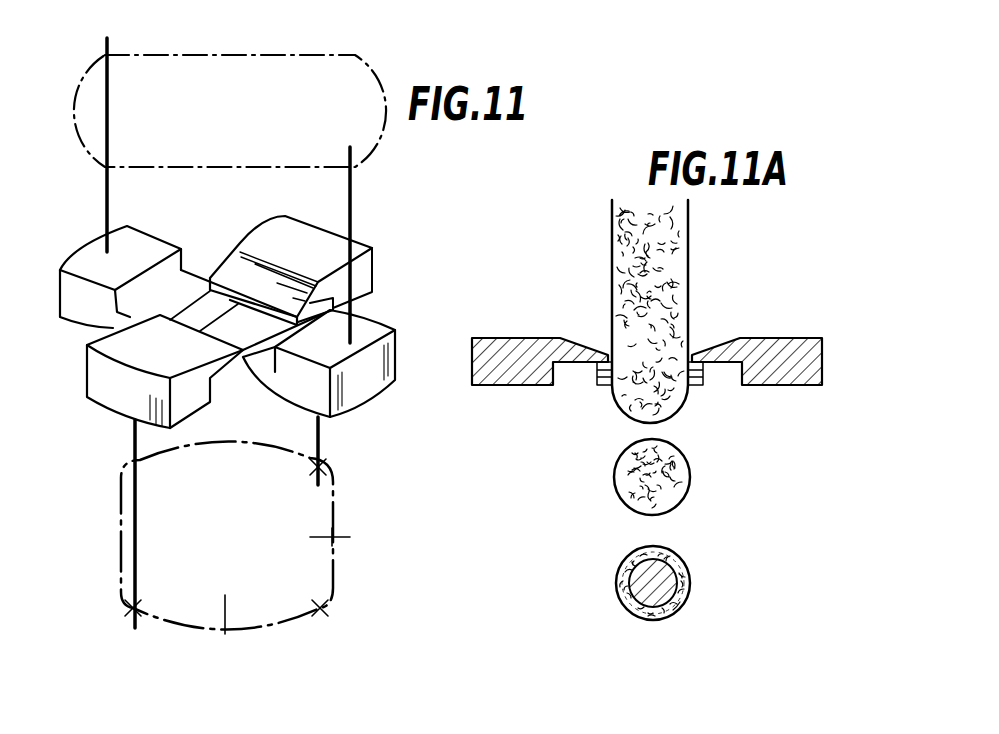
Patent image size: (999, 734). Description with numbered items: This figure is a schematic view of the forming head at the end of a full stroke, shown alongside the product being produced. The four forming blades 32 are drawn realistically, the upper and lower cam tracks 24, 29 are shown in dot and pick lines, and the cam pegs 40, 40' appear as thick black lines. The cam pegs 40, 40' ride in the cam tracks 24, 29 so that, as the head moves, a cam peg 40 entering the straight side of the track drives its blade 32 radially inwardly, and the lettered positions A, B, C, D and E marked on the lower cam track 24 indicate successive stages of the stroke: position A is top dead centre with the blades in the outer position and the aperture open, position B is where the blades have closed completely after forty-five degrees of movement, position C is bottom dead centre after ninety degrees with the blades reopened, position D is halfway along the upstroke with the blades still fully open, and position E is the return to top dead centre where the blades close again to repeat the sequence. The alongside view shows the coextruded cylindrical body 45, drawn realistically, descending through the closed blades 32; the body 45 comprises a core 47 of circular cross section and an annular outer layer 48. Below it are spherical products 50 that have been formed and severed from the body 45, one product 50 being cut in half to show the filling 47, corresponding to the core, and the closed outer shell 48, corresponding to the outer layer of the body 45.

In FIG. 11, the lower cam track 24 is at (120, 517).
In FIG. 11, the upper cam track 29 is at (253, 170).
In FIG. 11, the forming blades 32 is at (108, 381).
In FIG. 11A, the forming blades 32 is at (523, 355).
In FIG. 11, the cam pegs 40 is at (226, 519).
In FIG. 11, the cam pegs 40' is at (274, 190).
In FIG. 11A, the cylindrical body 45 is at (624, 262).
In FIG. 11A, the core 47 is at (682, 602).
In FIG. 11A, the outer layer 48 is at (687, 563).
In FIG. 11A, the spherical product 50 is at (625, 499).
In FIG. 11, the position A is at (333, 455).
In FIG. 11, the position B is at (345, 538).
In FIG. 11, the position C is at (333, 613).
In FIG. 11, the position D is at (228, 633).
In FIG. 11, the position E is at (125, 610).